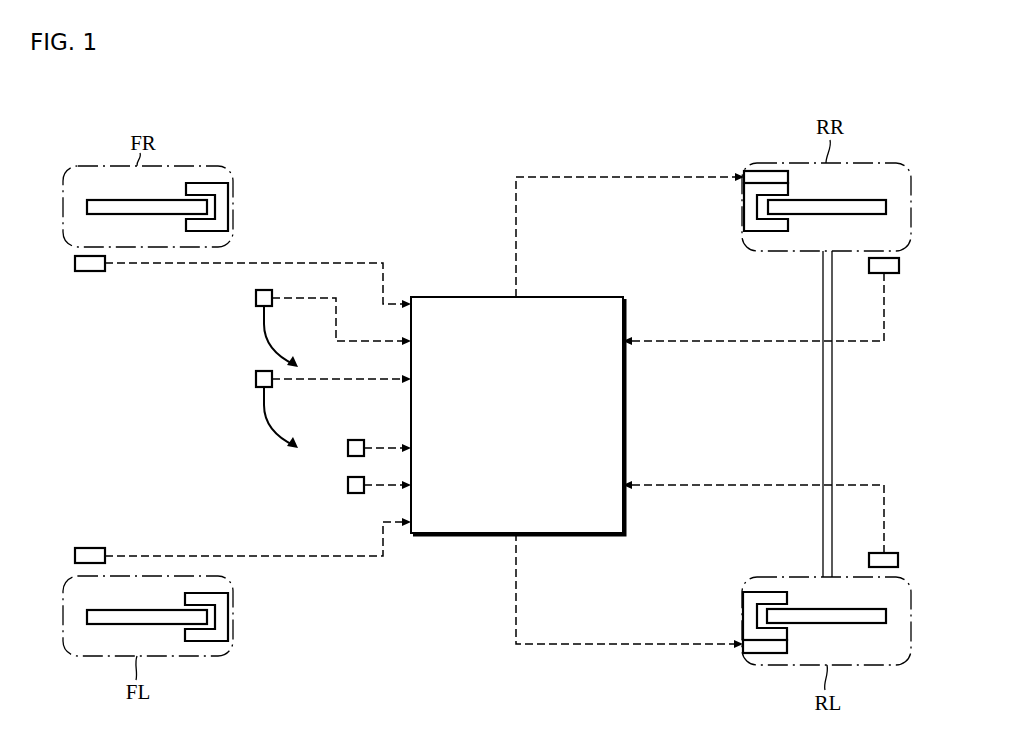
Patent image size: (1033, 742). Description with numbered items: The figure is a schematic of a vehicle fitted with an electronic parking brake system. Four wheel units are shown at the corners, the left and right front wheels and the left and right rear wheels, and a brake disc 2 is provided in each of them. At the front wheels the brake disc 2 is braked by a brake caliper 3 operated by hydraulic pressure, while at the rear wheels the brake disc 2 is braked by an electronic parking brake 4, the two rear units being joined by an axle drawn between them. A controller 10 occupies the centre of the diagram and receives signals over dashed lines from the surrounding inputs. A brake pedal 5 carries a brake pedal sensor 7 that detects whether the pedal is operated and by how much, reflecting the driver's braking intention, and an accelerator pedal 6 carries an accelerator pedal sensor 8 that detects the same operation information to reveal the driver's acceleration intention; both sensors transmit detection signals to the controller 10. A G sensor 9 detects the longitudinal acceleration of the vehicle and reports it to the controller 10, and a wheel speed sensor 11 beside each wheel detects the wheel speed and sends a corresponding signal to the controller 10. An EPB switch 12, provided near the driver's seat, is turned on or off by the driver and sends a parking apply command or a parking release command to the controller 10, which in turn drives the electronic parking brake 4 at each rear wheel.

The brake disc 2 is at (104, 200).
The brake caliper 3 is at (197, 183).
The electronic parking brake 4 is at (744, 220).
The brake pedal 5 is at (264, 336).
The accelerator pedal 6 is at (264, 416).
The brake pedal sensor 7 is at (256, 297).
The accelerator pedal sensor 8 is at (256, 378).
The G sensor 9 is at (348, 448).
The controller 10 is at (590, 297).
The wheel speed sensor 11 is at (88, 271).
The EPB switch 12 is at (348, 485).